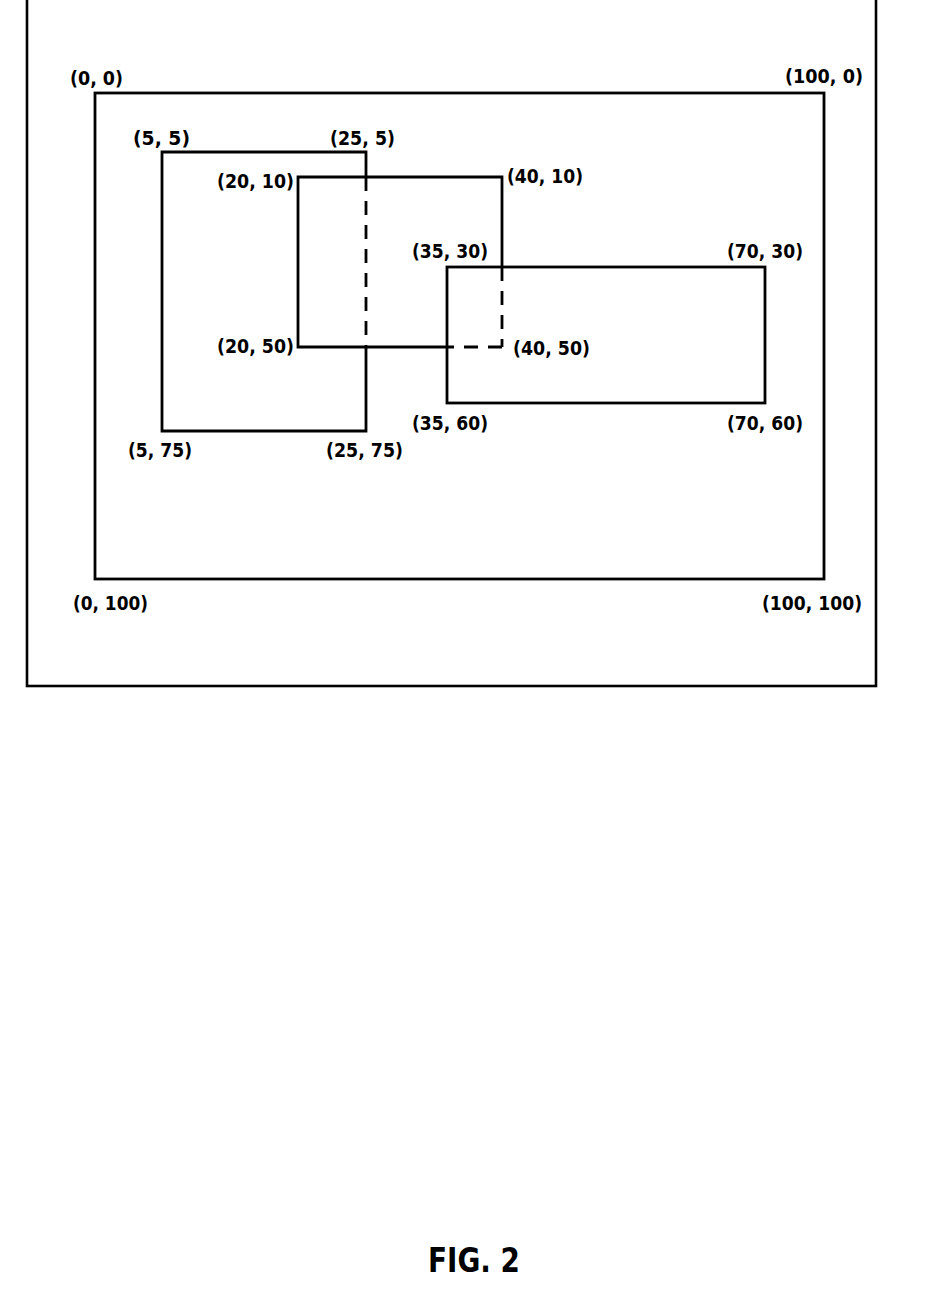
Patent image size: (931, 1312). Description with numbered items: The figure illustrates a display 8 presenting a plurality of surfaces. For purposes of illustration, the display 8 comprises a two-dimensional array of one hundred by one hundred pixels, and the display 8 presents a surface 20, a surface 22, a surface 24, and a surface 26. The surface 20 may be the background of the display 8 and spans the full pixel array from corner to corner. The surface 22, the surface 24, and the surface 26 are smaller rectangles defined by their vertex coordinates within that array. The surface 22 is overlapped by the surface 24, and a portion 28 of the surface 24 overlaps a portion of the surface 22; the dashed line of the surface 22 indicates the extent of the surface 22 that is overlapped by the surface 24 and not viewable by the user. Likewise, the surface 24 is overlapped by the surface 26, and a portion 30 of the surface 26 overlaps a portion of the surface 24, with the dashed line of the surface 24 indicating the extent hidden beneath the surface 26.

The display 8 is at (460, 659).
The surface 20 is at (270, 93).
The surface 22 is at (202, 152).
The surface 24 is at (433, 177).
The surface 26 is at (633, 267).
The portion 28 is at (343, 280).
The portion 30 is at (477, 295).